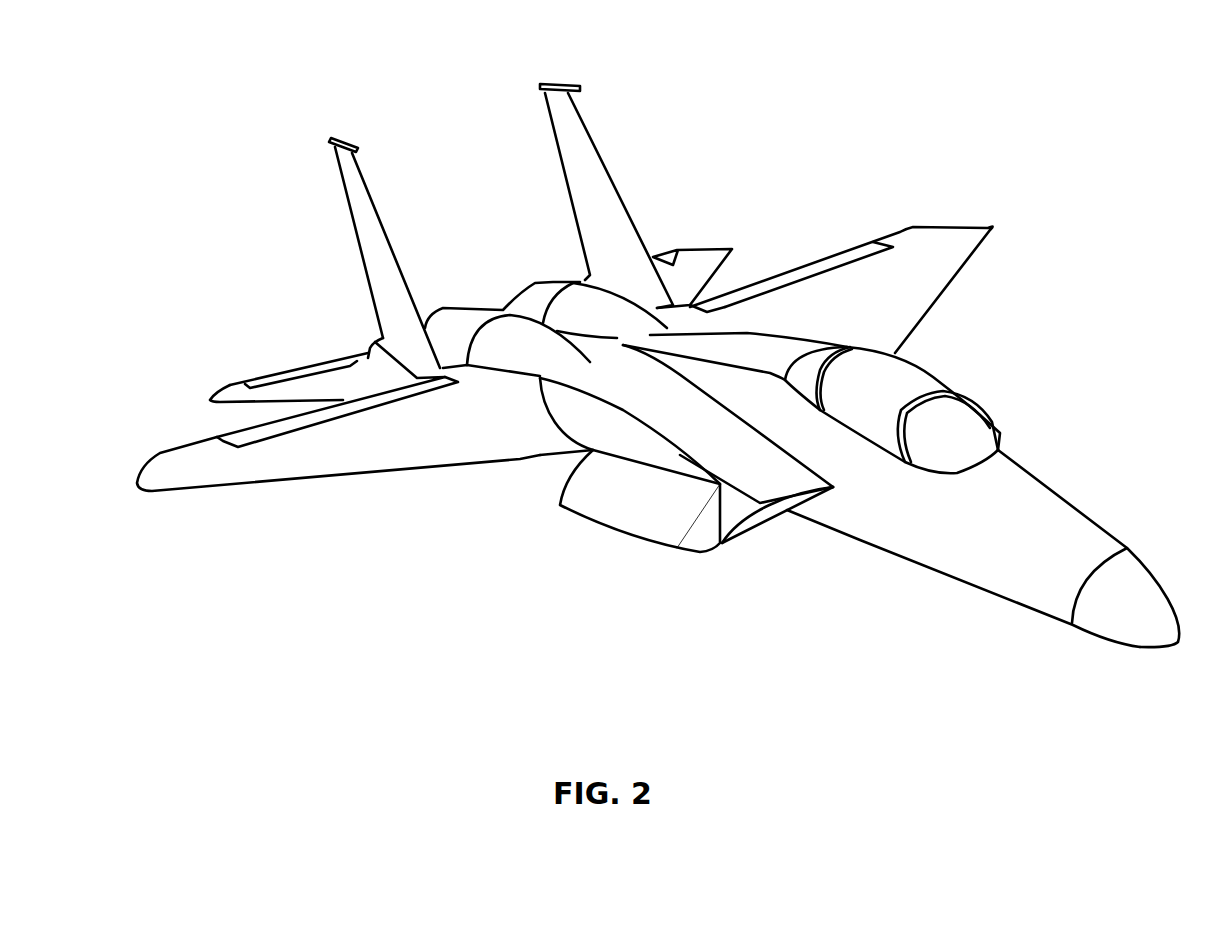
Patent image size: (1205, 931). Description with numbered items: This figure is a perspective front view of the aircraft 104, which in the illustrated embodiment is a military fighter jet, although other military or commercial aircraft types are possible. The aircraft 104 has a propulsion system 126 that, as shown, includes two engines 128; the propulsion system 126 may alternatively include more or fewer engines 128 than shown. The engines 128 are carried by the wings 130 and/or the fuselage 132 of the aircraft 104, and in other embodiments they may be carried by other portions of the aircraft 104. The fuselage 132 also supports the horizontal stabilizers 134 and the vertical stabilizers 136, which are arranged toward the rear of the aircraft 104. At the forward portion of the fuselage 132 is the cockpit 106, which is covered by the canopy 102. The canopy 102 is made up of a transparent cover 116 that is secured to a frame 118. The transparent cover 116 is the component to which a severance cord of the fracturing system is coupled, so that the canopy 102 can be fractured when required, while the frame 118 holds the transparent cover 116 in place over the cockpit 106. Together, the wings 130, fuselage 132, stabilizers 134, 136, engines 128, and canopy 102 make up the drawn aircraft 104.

The canopy 102 is at (887, 415).
The aircraft 104 is at (150, 108).
The cockpit 106 is at (896, 391).
The transparent cover 116 is at (870, 373).
The frame 118 is at (965, 400).
The propulsion system 126 is at (712, 617).
The engines 128 is at (771, 518).
The wings 130 is at (368, 473).
The fuselage 132 is at (753, 413).
The horizontal stabilizers 134 is at (273, 372).
The vertical stabilizers 136 is at (371, 193).